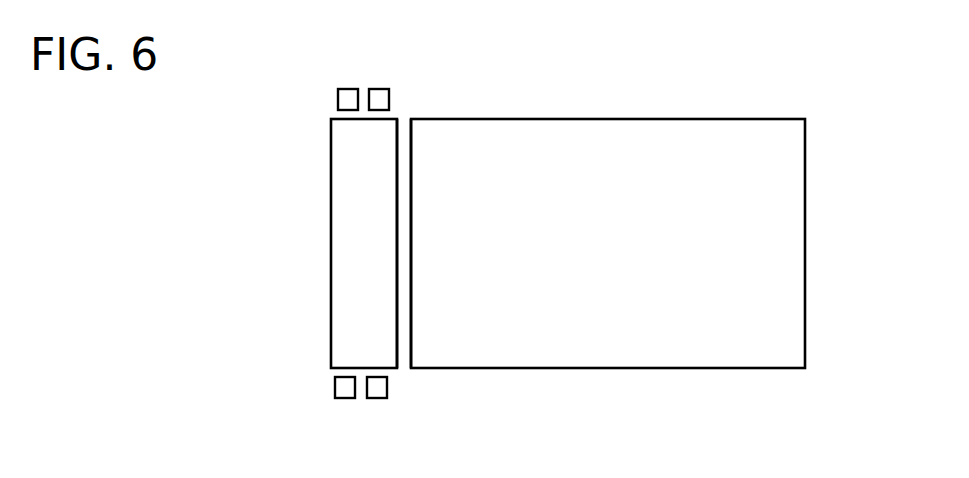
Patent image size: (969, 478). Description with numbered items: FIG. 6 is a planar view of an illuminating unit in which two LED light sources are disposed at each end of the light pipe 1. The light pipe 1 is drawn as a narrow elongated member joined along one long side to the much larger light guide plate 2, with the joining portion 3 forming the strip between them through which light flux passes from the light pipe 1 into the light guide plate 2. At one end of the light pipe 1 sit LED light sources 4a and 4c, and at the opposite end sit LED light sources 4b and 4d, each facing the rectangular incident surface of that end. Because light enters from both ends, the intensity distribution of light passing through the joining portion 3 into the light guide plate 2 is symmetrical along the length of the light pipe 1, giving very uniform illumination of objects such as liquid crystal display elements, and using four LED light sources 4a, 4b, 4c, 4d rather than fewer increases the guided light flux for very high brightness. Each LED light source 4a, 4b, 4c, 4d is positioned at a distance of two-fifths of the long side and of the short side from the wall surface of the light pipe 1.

The light pipe 1 is at (345, 253).
The light guide plate 2 is at (792, 277).
The joining portion 3 is at (407, 353).
The LED light source 4a is at (335, 390).
The LED light source 4b is at (343, 99).
The LED light source 4c is at (382, 388).
The LED light source 4d is at (378, 98).